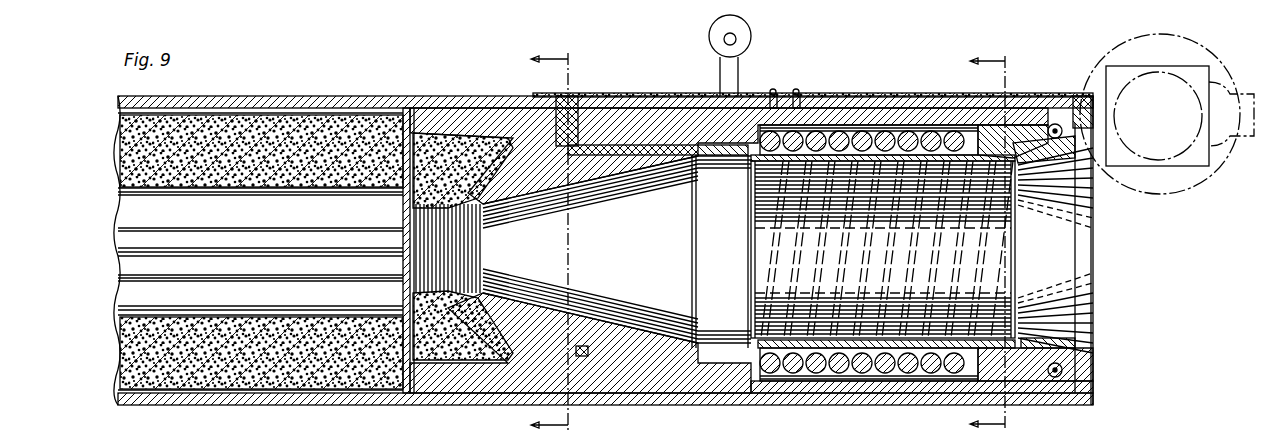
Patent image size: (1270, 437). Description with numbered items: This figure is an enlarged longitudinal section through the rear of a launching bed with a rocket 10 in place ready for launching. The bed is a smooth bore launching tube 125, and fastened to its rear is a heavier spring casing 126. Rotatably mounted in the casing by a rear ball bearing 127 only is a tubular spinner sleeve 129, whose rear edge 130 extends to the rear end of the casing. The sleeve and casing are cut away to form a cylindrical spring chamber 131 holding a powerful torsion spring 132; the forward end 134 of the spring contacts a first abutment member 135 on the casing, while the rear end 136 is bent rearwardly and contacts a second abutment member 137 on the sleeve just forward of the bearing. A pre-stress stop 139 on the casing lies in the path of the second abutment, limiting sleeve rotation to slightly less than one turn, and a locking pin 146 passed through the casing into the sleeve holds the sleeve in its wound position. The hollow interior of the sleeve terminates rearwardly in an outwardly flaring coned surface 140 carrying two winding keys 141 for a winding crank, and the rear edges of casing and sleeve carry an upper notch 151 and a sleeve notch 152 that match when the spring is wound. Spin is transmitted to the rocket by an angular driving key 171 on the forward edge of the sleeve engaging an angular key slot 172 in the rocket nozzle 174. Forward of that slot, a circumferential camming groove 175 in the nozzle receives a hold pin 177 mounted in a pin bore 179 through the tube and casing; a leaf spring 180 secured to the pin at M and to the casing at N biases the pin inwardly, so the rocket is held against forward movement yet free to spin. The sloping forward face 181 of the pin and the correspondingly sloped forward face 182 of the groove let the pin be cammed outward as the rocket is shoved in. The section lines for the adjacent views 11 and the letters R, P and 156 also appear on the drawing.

The launching tube 125 is at (386, 90).
The leaf spring 180 is at (631, 90).
The hold pin 177 is at (566, 92).
The circumferential camming groove 175 is at (502, 134).
The pin bore 179 is at (543, 90).
The forward face of hold pin 181 is at (525, 165).
The rocket nozzle 174 is at (586, 166).
The angular driving key 171 is at (625, 168).
The angular key slot 172 is at (643, 164).
The forward face of groove 182 is at (575, 348).
The rocket 10 is at (565, 242).
The locking pin 146 is at (690, 48).
The forward end of spring 134 is at (764, 88).
The first abutment member 135 is at (806, 124).
The spring casing 126 is at (872, 104).
The cylindrical spring chamber 131 is at (894, 144).
The spinner sleeve 129 is at (970, 356).
The torsion spring 132 is at (842, 362).
The rear ball bearing 127 is at (1056, 382).
The second abutment member 137 is at (958, 136).
The pre-stress stop 139 is at (976, 130).
The rear end of spring 136 is at (1042, 116).
The rear edge of sleeve 130 is at (1054, 360).
The coned surface 140 is at (1067, 334).
The winding keys 141 is at (1052, 170).
The upper notch 151 is at (1071, 90).
The sleeve notch 152 is at (1078, 143).
The phantom fitting 156 is at (1149, 189).
The section line 11- 11 is at (1005, 243).
The rocket motor R is at (260, 251).
The cone P is at (617, 251).
The securing point of leaf spring to pin M is at (561, 88).
The securing point of leaf spring to housing N is at (788, 86).